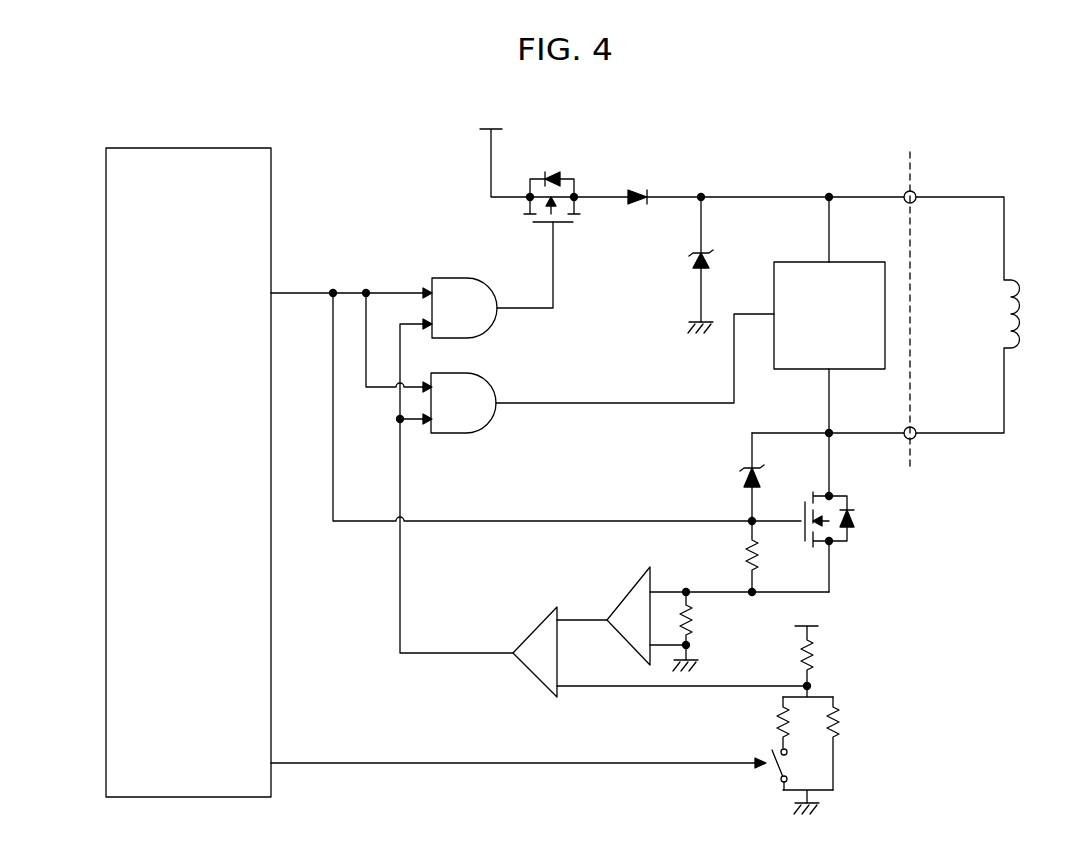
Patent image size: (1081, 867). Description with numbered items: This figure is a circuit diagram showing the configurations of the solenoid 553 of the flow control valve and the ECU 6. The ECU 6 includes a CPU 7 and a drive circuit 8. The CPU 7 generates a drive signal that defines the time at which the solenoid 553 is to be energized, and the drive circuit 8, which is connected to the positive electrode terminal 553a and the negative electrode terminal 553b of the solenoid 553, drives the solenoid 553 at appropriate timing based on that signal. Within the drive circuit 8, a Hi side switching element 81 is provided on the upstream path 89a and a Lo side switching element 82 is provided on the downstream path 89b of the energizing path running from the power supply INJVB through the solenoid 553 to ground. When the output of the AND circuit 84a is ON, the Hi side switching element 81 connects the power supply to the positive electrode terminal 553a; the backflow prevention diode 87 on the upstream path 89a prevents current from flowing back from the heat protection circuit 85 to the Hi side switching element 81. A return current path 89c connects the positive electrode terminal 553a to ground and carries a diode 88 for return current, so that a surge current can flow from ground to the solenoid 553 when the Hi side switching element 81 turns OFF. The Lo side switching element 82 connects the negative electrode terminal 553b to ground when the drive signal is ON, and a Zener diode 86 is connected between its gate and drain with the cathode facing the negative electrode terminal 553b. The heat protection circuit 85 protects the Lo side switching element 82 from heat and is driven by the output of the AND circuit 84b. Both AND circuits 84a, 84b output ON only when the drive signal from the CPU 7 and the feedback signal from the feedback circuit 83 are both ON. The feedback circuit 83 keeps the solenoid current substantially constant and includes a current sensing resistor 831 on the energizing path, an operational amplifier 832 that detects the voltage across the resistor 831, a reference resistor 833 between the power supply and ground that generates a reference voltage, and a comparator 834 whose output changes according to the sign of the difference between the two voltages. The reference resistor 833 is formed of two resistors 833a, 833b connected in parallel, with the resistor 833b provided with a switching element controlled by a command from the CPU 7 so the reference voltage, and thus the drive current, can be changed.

The CPU 7 is at (140, 147).
The ECU 6 is at (368, 125).
The drive circuit 8 is at (835, 130).
The Hi side switching element 81 is at (577, 150).
The Lo side switching element 82 is at (856, 477).
The feedback circuit 83 is at (517, 580).
The AND circuit 84a is at (470, 278).
The AND circuit 84b is at (482, 373).
The heat protection circuit 85 is at (845, 262).
The Zener diode 86 is at (748, 467).
The backflow prevention diode 87 is at (643, 188).
The diode for return current 88 is at (712, 257).
The upstream path 89a is at (750, 195).
The downstream path 89b is at (853, 431).
The return current path 89c is at (703, 240).
The current sensing resistor 831 is at (700, 620).
The operational amplifier 832 is at (652, 570).
The reference resistor 833 is at (857, 685).
The resistor 833a is at (843, 724).
The resistor 833b is at (773, 725).
The comparator 834 is at (558, 606).
The solenoid 553 is at (1010, 281).
The positive electrode terminal 553a is at (917, 191).
The negative electrode terminal 553b is at (916, 427).